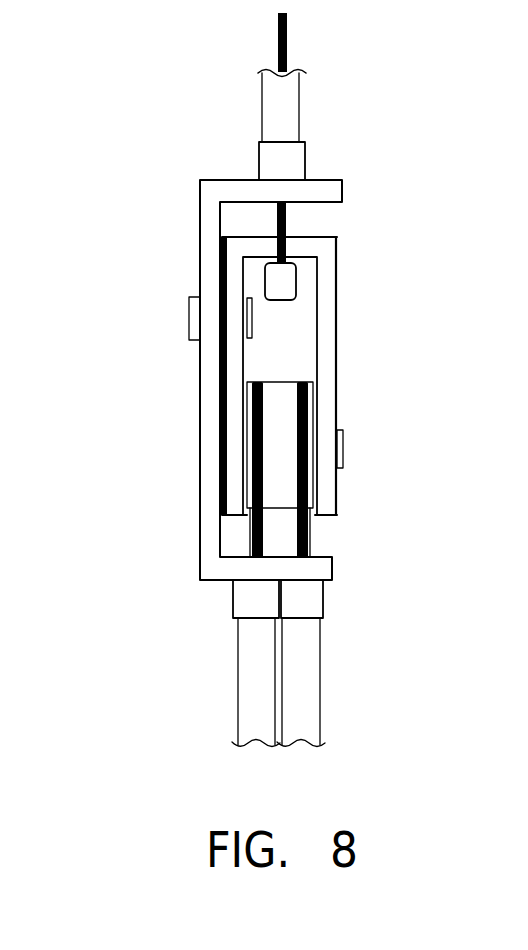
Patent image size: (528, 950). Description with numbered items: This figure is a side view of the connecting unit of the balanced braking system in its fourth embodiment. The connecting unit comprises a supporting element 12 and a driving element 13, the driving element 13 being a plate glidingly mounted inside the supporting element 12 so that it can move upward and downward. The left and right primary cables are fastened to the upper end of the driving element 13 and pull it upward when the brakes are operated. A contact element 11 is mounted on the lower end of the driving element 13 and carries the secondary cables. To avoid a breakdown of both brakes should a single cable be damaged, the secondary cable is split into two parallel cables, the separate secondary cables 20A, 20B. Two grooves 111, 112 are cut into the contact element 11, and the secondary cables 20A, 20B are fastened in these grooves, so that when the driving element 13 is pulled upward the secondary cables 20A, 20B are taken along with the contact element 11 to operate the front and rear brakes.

The supporting element 12 is at (208, 257).
The driving element 13 is at (327, 327).
The contact element 11 is at (278, 479).
The groove 111 is at (320, 417).
The groove 112 is at (247, 398).
The secondary cable 20A is at (305, 538).
The secondary cable 20B is at (257, 537).